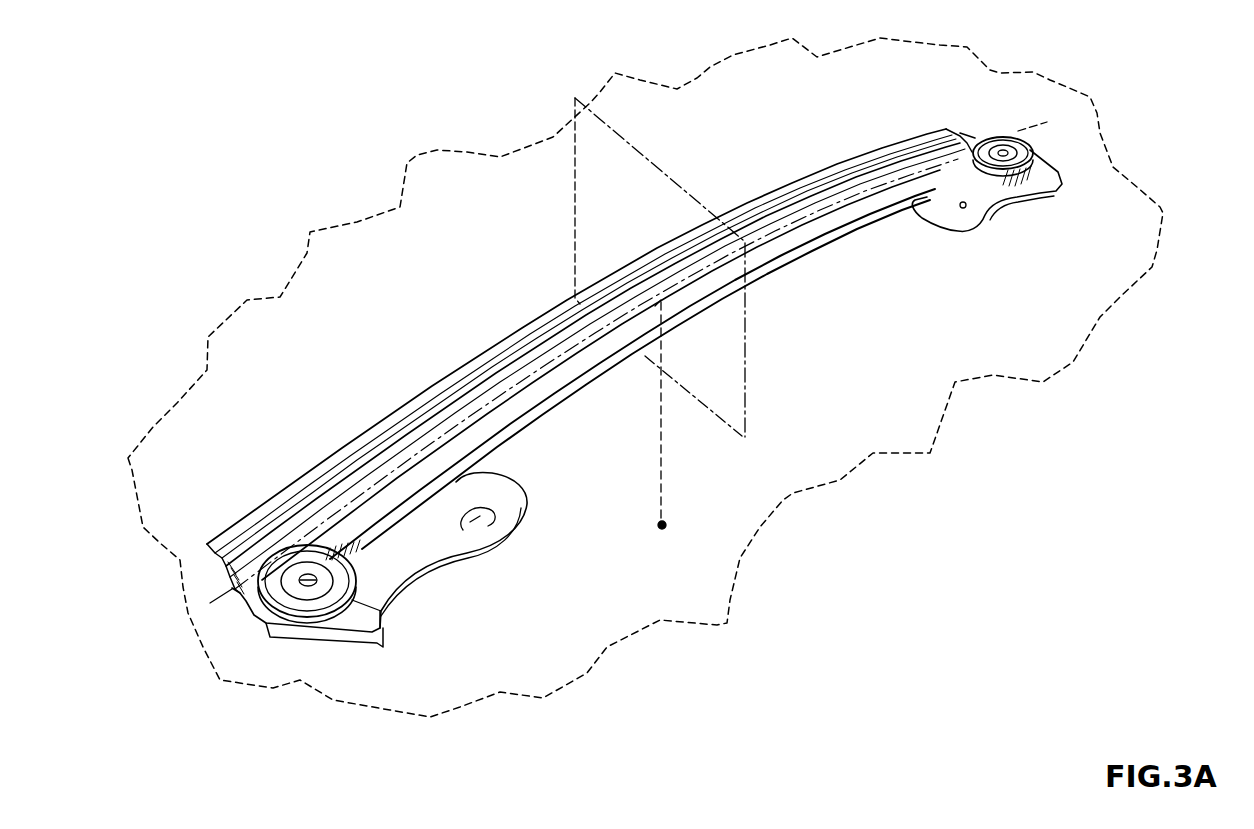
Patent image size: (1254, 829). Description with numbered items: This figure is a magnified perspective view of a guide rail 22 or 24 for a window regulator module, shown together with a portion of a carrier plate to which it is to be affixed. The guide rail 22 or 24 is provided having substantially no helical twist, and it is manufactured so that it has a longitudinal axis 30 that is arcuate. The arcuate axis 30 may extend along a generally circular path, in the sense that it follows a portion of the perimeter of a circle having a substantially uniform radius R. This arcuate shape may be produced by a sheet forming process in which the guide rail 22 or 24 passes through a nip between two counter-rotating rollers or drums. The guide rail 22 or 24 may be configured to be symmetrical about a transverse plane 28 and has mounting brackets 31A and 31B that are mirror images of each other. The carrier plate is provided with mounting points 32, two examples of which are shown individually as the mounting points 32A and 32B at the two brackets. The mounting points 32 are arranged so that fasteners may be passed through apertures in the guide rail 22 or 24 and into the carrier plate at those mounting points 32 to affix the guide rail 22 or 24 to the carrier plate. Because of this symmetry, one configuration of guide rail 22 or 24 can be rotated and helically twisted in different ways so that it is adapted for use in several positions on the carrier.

The guide rail 22 is at (589, 348).
The guide rail 24 is at (589, 348).
The longitudinal axis 30 is at (478, 418).
The mounting bracket 31A is at (510, 491).
The mounting bracket 31B is at (1046, 158).
The mounting points 32 is at (697, 380).
The mounting point 32A is at (463, 529).
The mounting point 32B is at (960, 204).
The transverse plane 28 is at (745, 410).
The radius R is at (661, 447).